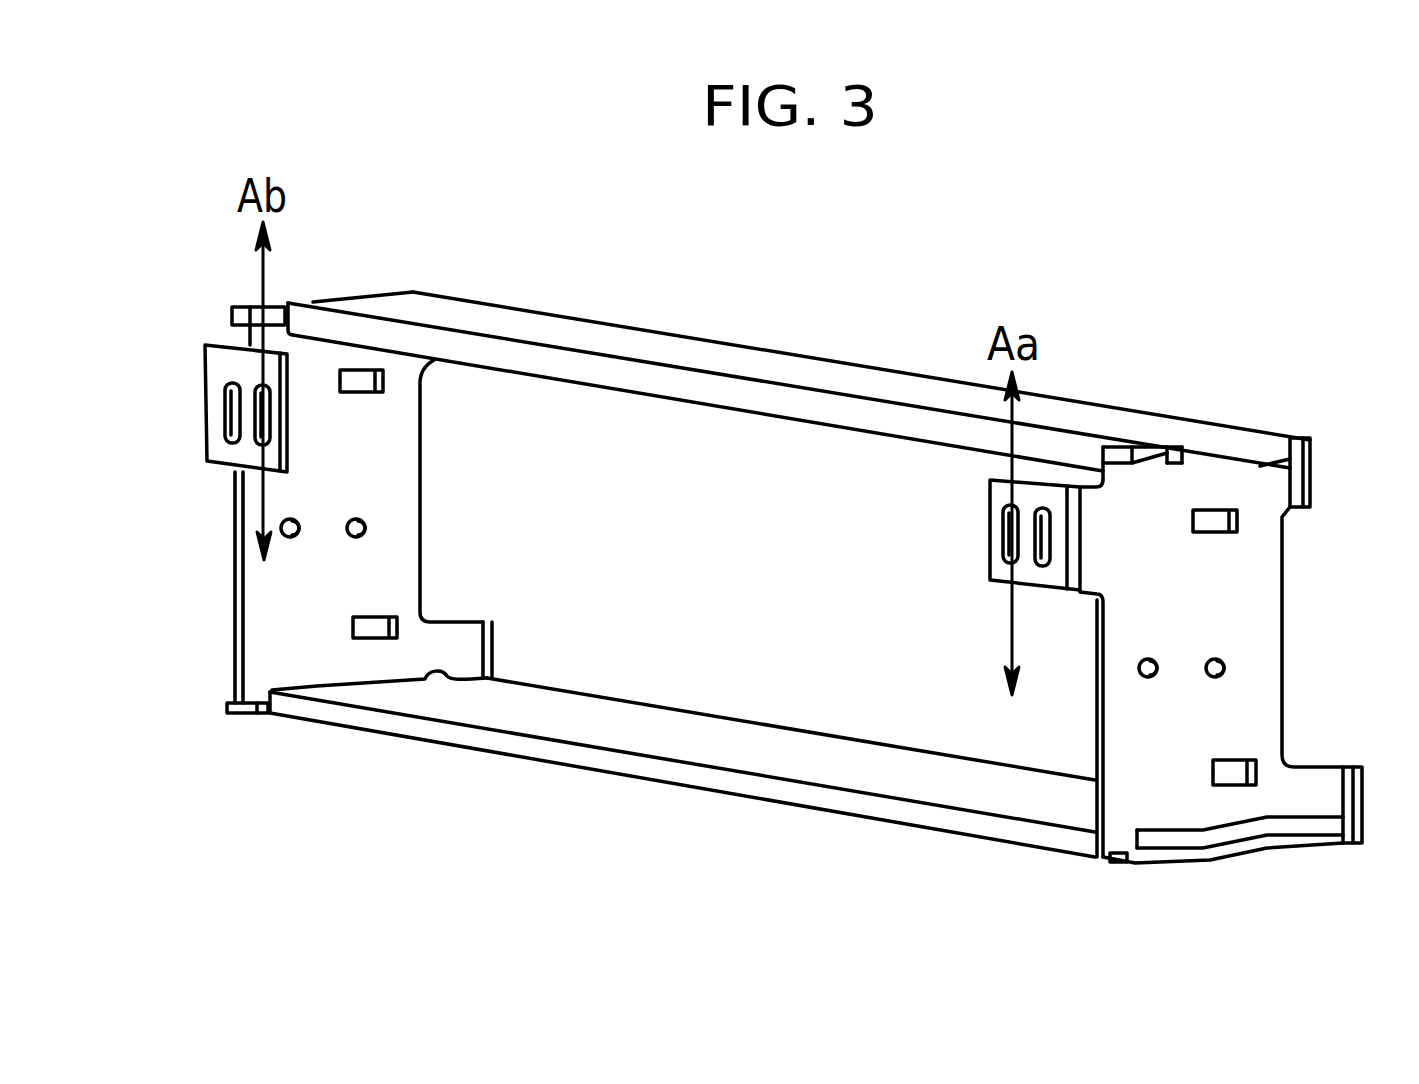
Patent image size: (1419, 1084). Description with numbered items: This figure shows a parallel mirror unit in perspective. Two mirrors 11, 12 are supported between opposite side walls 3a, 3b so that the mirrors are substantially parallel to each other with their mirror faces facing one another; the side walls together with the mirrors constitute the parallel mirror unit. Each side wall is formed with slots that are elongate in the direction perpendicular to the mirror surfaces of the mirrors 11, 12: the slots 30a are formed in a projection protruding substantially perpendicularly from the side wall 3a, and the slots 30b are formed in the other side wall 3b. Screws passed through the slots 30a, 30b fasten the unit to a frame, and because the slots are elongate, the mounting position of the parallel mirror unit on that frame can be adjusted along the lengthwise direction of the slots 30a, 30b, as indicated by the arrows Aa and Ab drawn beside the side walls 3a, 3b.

The mirror 12 is at (777, 352).
The mirror 11 is at (733, 768).
The side wall 3a is at (1272, 665).
The side wall 3b is at (260, 603).
The slot 30a is at (1050, 547).
The slot 30b is at (223, 417).